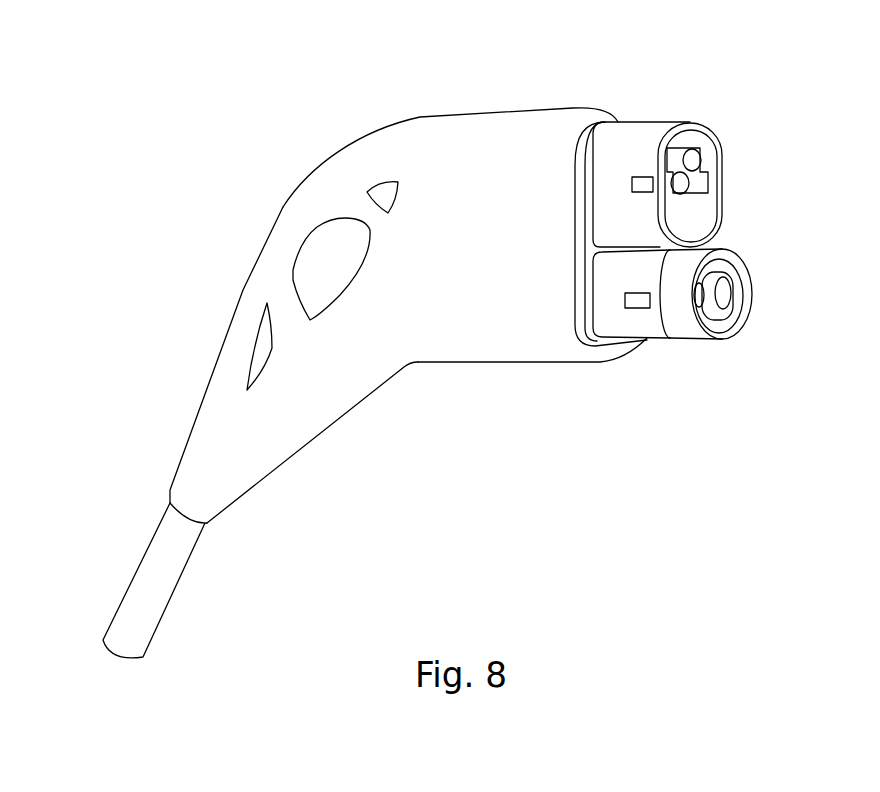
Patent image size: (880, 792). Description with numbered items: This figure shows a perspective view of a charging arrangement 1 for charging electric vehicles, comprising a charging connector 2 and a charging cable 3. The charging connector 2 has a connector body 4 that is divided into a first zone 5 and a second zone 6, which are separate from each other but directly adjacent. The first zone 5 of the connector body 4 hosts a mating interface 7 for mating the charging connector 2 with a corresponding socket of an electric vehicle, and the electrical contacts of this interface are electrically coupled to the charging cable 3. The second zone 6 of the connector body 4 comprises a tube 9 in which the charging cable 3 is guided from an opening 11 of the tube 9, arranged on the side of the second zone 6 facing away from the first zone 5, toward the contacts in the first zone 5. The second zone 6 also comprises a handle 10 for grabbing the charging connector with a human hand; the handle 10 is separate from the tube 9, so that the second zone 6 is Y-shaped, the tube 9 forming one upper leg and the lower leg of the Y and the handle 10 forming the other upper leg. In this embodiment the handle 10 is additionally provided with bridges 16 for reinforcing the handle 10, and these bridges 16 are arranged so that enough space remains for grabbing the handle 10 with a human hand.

The charging arrangement 1 is at (135, 202).
The charging connector 2 is at (447, 423).
The charging cable 3 is at (147, 583).
The connector body 4 is at (515, 88).
The first zone 5 is at (542, 330).
The second zone 6 is at (278, 425).
The mating interface 7 is at (680, 320).
The tube 9 is at (338, 377).
The handle 10 is at (290, 233).
The opening 11 is at (205, 523).
The bridges 16 is at (362, 210).